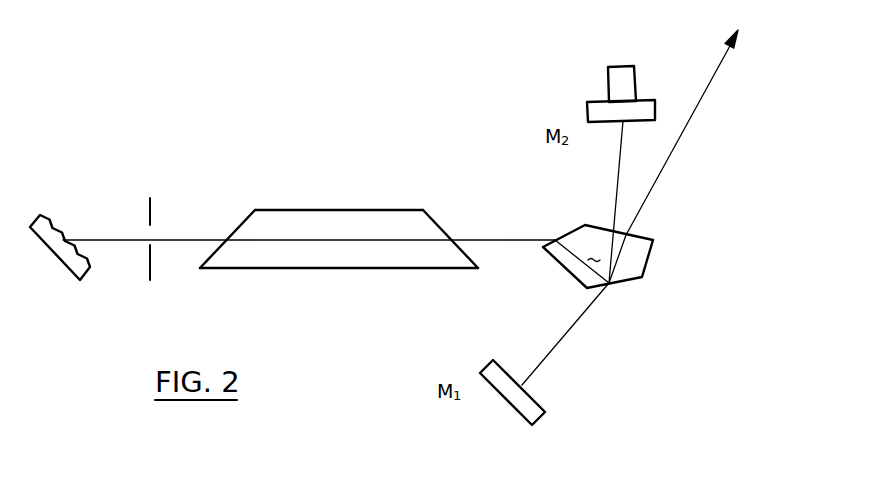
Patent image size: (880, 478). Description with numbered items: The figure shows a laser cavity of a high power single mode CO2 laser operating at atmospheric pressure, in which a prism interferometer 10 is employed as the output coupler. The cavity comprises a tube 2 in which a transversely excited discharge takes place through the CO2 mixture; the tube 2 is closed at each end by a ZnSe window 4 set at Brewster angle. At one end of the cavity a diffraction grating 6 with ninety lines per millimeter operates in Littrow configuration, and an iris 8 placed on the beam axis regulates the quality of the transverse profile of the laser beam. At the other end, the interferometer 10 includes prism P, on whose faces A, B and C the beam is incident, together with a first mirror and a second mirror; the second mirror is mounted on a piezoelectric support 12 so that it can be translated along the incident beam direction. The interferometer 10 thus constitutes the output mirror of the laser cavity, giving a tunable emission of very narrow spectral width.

The tube 2 is at (339, 231).
The ZnSe window 4 is at (243, 223).
The diffraction grating 6 is at (63, 239).
The iris 8 is at (148, 258).
The prism interferometer 10 is at (660, 235).
The piezoelectric support 12 is at (620, 83).